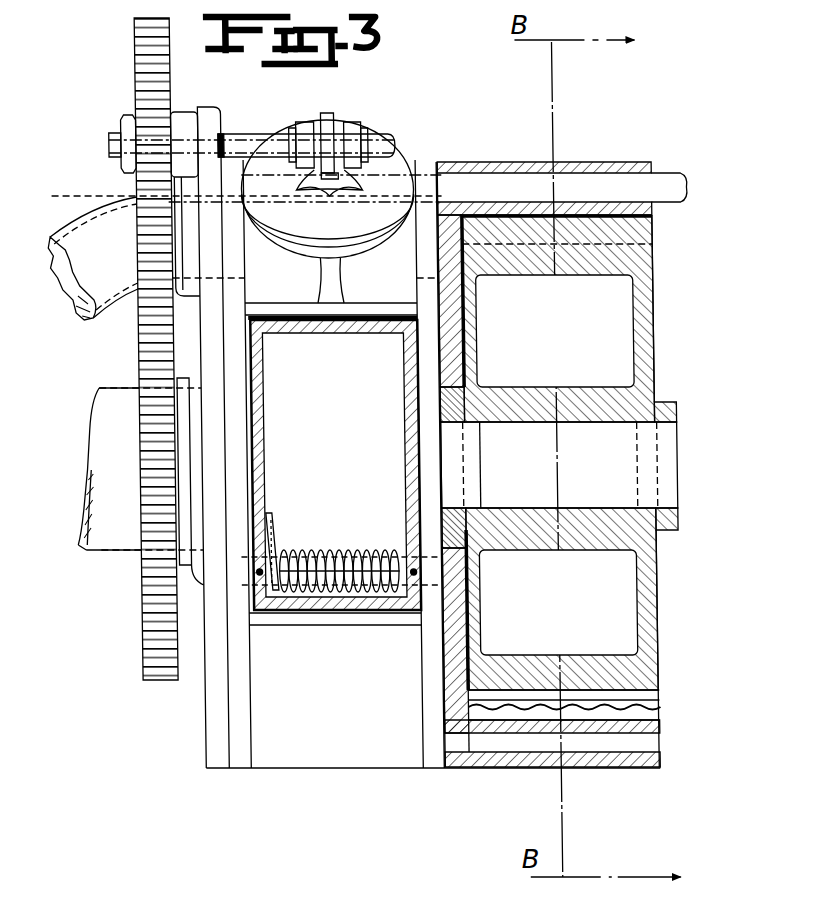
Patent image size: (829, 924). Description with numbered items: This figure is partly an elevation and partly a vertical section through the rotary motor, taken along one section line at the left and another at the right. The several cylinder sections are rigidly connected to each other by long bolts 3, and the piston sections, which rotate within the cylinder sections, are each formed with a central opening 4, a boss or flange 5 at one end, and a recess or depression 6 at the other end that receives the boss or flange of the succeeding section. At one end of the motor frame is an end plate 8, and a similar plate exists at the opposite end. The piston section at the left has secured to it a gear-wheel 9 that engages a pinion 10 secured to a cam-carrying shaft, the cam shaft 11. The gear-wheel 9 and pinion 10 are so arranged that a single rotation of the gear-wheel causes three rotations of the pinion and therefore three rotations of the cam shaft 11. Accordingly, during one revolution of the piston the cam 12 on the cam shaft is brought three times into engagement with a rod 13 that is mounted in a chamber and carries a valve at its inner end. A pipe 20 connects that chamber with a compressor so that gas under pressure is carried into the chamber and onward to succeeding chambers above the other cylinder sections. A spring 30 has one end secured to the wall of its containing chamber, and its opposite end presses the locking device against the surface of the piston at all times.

The long bolts 3 is at (676, 178).
The central opening 4 is at (559, 465).
The boss or flange 5 is at (664, 407).
The recess or depression 6 is at (480, 403).
The end plate 8 is at (100, 463).
The gear-wheel 9 is at (150, 578).
The pinion 10 is at (140, 79).
The cam shaft 11 is at (243, 143).
The cam 12 is at (333, 118).
The rod 13 is at (332, 179).
The pipe 20 is at (93, 258).
The spring 30 is at (340, 546).